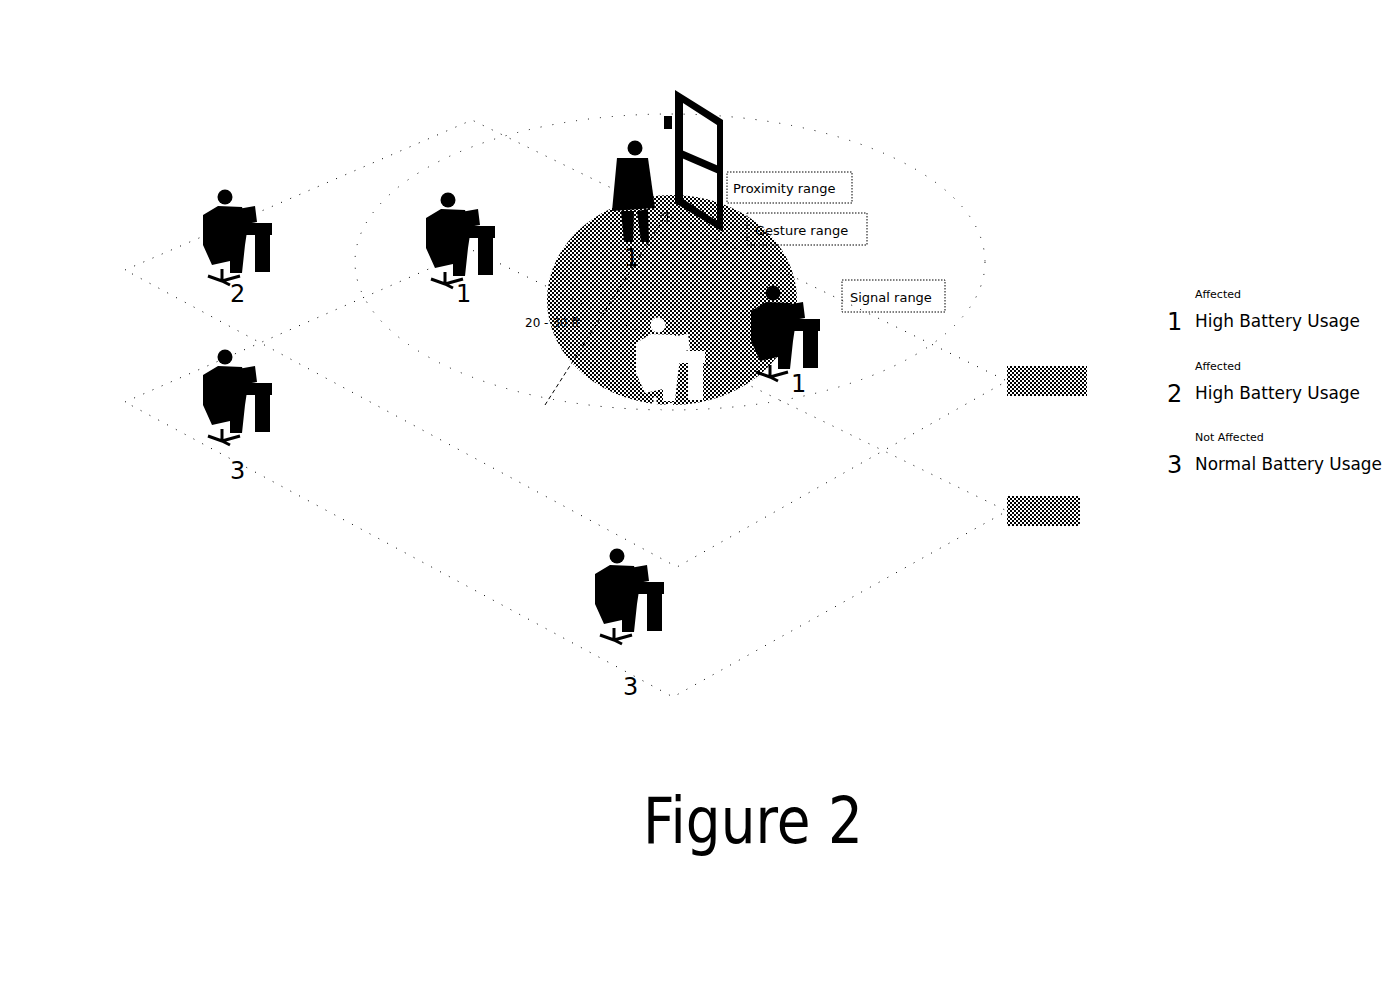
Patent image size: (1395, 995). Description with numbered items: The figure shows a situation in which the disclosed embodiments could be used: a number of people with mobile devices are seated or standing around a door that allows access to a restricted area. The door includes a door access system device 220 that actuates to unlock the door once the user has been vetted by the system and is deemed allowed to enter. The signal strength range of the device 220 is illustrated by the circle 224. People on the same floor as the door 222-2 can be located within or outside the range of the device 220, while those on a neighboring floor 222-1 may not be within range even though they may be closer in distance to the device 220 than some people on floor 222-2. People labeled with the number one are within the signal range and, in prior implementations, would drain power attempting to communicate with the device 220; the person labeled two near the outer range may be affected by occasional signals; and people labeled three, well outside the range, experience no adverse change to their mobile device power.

The door access system device 220 is at (650, 114).
The neighboring floor 222-1 is at (410, 528).
The floor of the door 222-2 is at (947, 360).
The circle illustrating signal strength range 224 is at (945, 205).